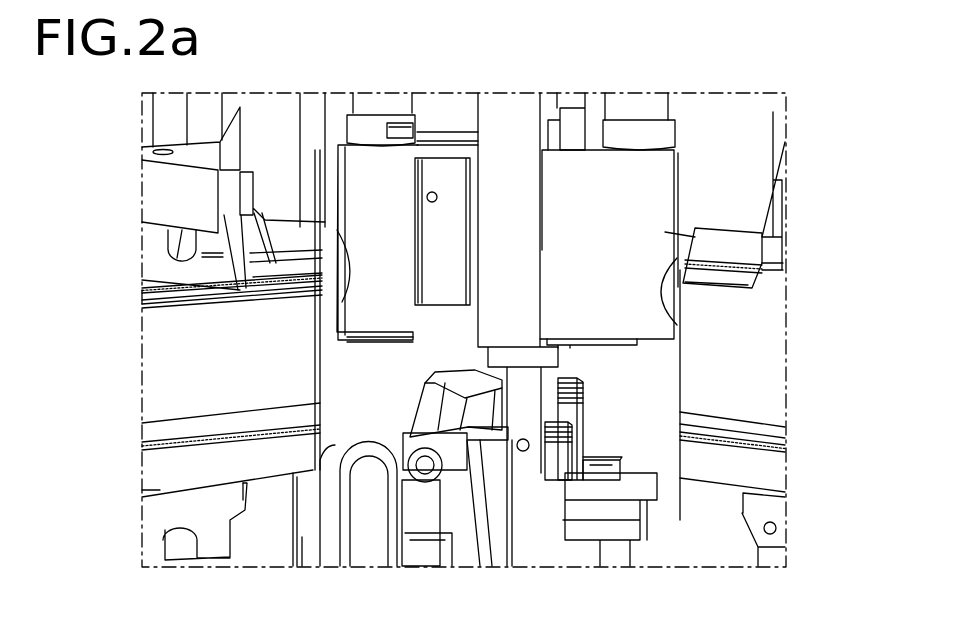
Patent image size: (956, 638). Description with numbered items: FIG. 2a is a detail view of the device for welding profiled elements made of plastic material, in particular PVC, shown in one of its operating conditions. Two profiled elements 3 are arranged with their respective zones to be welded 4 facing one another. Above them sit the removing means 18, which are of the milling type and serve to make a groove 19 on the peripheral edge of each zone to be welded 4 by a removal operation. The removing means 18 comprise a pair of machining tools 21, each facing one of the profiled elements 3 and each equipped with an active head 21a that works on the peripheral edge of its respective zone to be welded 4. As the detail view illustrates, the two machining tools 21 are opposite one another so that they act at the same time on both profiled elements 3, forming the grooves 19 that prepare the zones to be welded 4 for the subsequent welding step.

The removing means 18 is at (708, 114).
The profiled element 3 is at (167, 392).
The zone to be welded 4 is at (329, 388).
The groove 19 is at (320, 315).
The machining tool 21 is at (383, 188).
The active head 21a is at (337, 230).